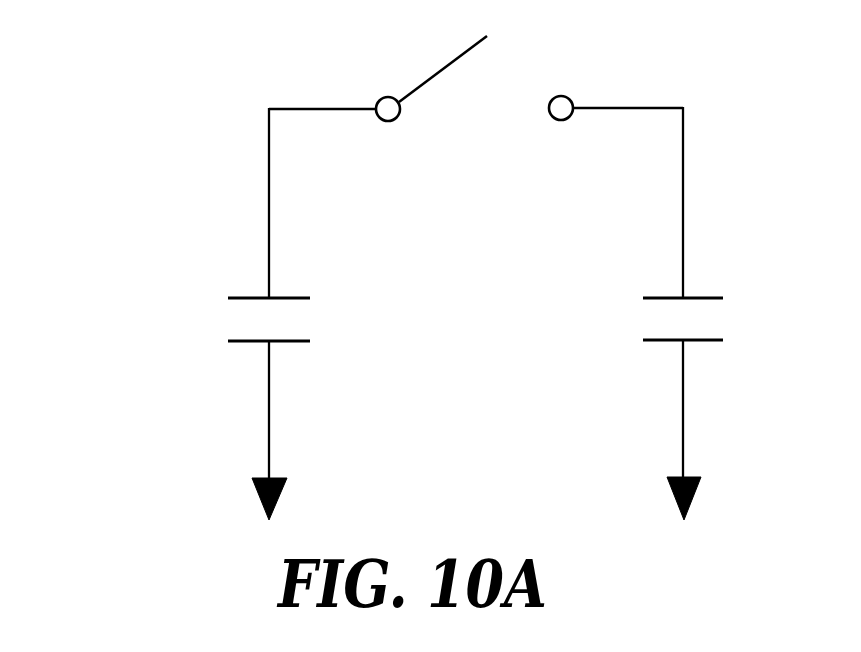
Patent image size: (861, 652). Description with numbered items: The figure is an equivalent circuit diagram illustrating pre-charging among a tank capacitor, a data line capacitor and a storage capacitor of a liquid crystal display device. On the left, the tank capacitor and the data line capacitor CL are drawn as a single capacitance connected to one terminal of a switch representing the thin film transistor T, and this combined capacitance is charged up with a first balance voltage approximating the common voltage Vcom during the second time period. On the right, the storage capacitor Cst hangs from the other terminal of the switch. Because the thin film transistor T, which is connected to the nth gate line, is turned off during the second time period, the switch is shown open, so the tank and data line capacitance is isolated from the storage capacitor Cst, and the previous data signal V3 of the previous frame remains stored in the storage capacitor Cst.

The thin film transistor T is at (476, 115).
The data line capacitor CL is at (174, 314).
The common voltage Vcom is at (375, 322).
The storage capacitor Cst is at (645, 313).
The previous data signal V3 is at (778, 321).